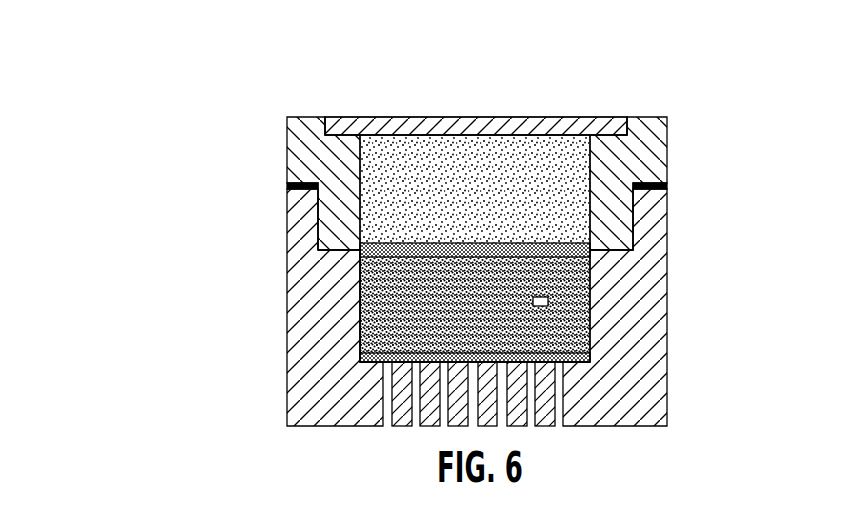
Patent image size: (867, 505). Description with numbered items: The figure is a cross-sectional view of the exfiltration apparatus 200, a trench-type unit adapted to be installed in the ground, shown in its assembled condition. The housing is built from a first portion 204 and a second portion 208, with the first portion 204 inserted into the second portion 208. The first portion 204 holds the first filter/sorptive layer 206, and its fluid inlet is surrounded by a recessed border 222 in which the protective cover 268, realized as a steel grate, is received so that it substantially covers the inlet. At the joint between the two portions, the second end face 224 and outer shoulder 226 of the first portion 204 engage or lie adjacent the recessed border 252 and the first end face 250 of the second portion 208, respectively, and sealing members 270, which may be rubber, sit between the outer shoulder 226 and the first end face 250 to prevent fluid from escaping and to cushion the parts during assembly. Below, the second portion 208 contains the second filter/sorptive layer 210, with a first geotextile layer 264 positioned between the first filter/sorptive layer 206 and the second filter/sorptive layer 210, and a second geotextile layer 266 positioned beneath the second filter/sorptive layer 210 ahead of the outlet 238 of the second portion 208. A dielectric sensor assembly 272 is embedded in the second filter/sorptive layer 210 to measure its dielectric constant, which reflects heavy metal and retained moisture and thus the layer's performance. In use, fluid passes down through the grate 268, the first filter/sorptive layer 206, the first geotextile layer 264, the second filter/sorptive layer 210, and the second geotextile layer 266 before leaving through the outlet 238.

The exfiltration apparatus 200 is at (142, 52).
The first portion 204 is at (657, 142).
The first filter/sorptive layer 206 is at (568, 175).
The second portion 208 is at (640, 347).
The second filter/sorptive layer 210 is at (590, 325).
The recessed border 222 is at (345, 117).
The second end face 224 is at (595, 252).
The outer shoulder 226 is at (637, 189).
The outlet 238 is at (407, 452).
The first end face 250 is at (316, 185).
The recessed border 252 is at (345, 250).
The first geotextile layer 264 is at (360, 262).
The second geotextile layer 266 is at (360, 363).
The protective cover 268 is at (557, 122).
The sealing members 270 is at (287, 185).
The dielectric sensor assembly 272 is at (548, 301).